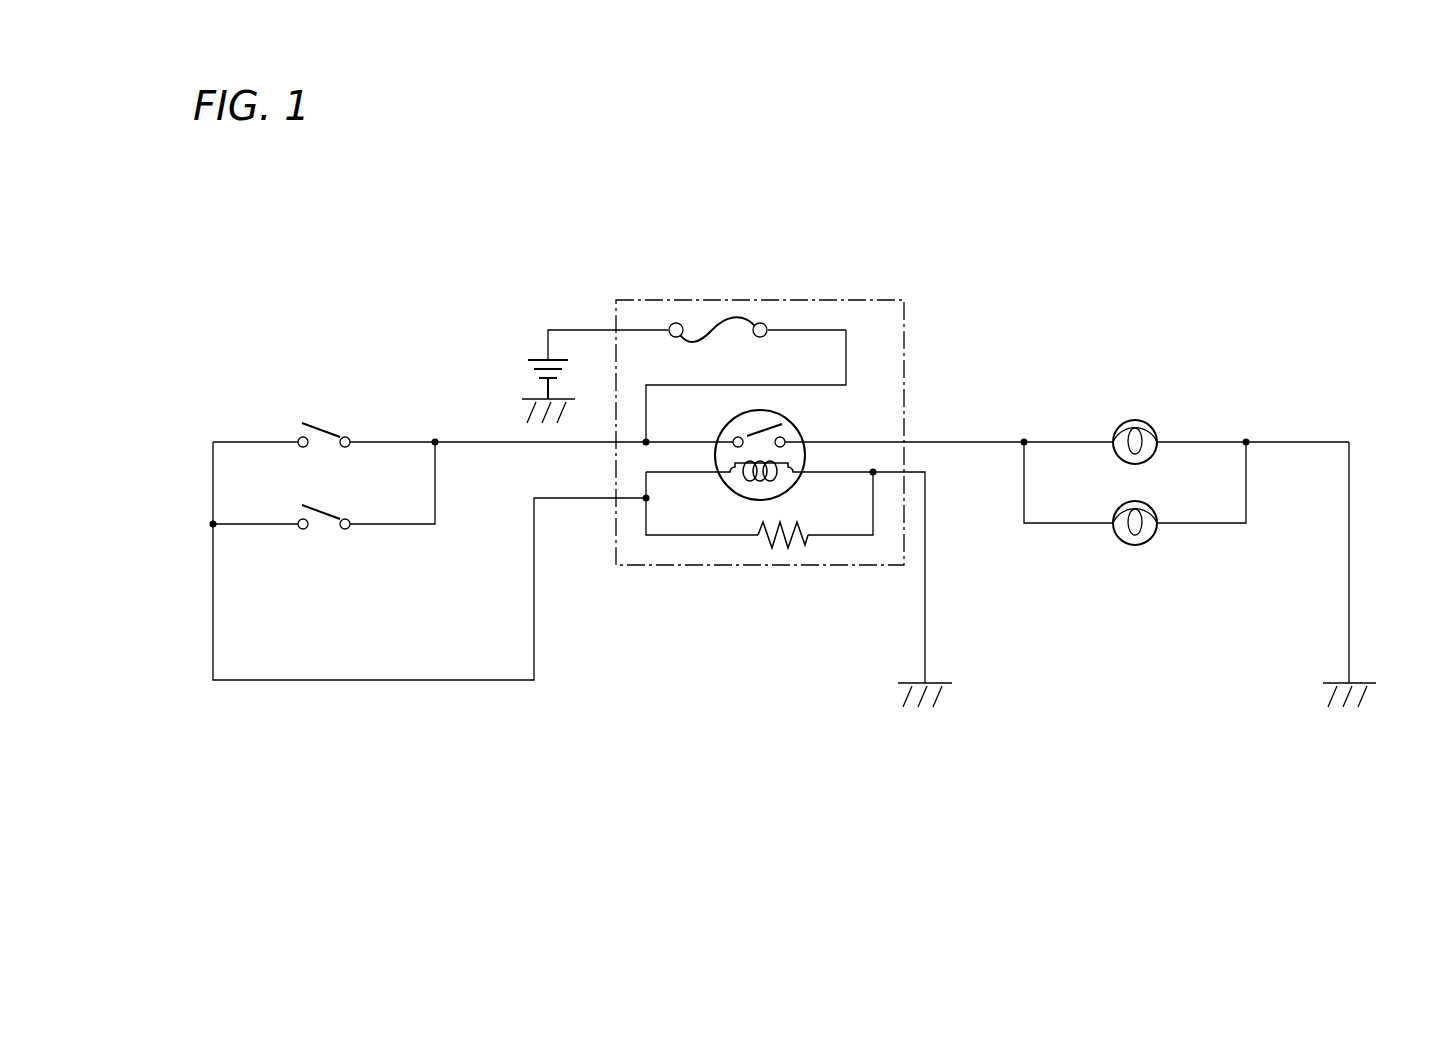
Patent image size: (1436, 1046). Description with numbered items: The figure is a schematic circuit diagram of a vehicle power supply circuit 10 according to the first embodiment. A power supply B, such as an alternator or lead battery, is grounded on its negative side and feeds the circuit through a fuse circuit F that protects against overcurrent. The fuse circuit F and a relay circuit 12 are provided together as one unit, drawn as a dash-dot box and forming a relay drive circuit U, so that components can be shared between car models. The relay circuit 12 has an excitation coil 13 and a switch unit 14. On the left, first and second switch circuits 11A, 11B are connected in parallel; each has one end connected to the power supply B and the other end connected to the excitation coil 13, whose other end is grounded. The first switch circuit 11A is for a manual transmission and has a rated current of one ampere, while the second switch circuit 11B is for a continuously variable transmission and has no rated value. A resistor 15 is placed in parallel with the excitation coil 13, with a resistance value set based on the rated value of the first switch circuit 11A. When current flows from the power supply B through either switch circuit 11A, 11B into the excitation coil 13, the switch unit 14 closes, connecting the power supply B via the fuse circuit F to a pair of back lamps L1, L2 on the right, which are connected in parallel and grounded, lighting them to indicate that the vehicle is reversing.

The vehicle power supply circuit 10 is at (393, 256).
The first switch circuit 11A is at (326, 426).
The second switch circuit 11B is at (326, 511).
The relay circuit 12 is at (942, 240).
The excitation coil 13 is at (782, 458).
The switch unit 14 is at (763, 432).
The resistor 15 is at (782, 548).
The power supply B is at (540, 358).
The fuse circuit F is at (710, 328).
The relay drive circuit U is at (772, 300).
The back lamp L1 is at (1135, 419).
The back lamp L2 is at (1137, 546).